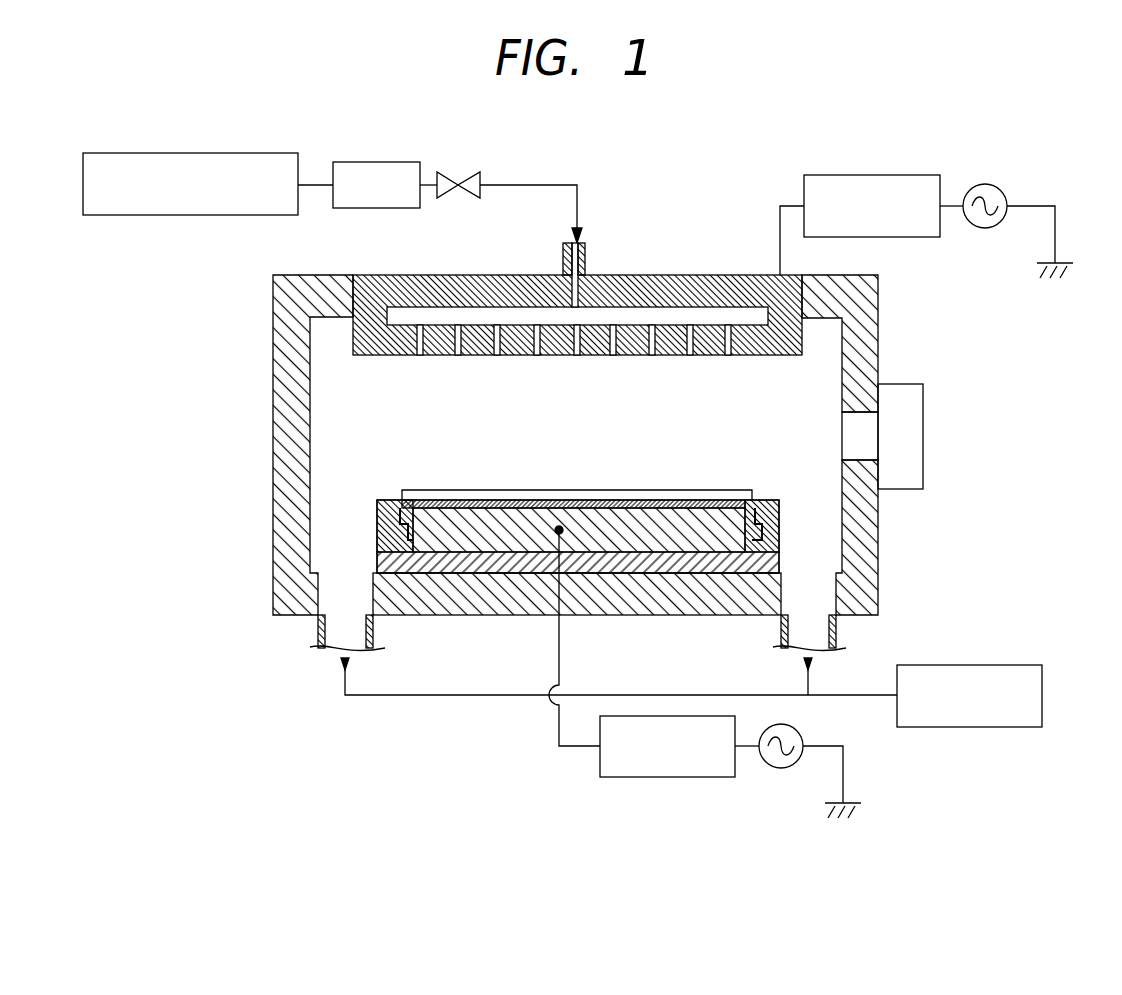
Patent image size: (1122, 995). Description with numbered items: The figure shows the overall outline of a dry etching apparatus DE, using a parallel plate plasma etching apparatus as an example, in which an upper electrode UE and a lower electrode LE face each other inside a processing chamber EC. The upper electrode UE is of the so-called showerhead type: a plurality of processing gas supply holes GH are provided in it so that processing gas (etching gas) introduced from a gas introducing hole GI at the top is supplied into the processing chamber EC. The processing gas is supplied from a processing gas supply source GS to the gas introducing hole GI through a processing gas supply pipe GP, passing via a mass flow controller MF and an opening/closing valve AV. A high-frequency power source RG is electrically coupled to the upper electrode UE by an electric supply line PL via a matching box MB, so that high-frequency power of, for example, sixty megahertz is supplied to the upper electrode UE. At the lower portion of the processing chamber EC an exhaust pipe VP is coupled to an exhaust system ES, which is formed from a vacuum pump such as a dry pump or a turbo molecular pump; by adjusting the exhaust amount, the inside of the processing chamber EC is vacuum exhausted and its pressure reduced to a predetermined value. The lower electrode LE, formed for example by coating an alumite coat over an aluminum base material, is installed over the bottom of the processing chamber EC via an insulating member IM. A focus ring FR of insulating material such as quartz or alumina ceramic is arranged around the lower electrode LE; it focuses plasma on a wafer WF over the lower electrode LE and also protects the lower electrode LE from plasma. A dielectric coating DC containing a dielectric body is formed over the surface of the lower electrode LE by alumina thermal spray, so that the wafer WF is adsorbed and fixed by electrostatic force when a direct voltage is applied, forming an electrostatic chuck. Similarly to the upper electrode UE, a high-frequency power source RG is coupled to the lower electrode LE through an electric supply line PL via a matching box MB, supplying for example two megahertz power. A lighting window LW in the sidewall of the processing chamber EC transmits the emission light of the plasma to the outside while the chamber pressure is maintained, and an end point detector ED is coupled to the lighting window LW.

The dry etching apparatus DE is at (200, 463).
The processing gas supply source GS is at (220, 153).
The mass flow controller MF is at (375, 162).
The opening/closing valve AV is at (455, 172).
The processing gas supply pipe GP is at (533, 185).
The gas introducing hole GI is at (586, 274).
The processing chamber EC is at (283, 372).
The upper electrode UE is at (577, 327).
The processing gas supply holes GH is at (497, 355).
The lighting window LW is at (842, 418).
The end point detector ED is at (920, 415).
The wafer WF is at (530, 490).
The dielectric coating DC is at (645, 500).
The focus ring FR is at (765, 500).
The lower electrode LE is at (437, 540).
The insulating member IM is at (510, 570).
The exhaust pipe VP is at (318, 633).
The exhaust system ES is at (987, 665).
The electric supply line PL is at (780, 220).
The matching box MB is at (900, 175).
The high-frequency power source RG is at (993, 184).